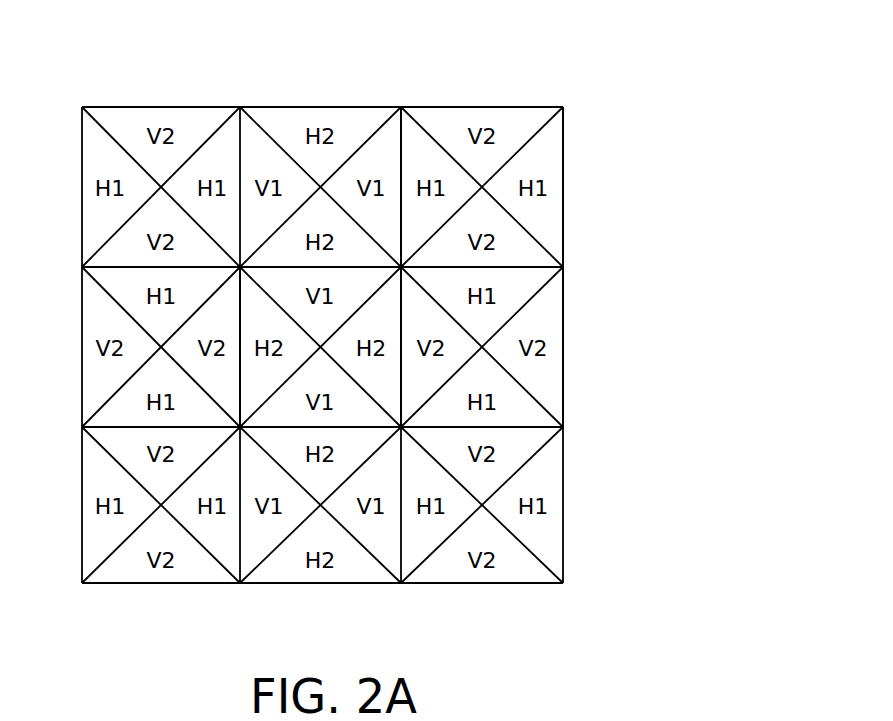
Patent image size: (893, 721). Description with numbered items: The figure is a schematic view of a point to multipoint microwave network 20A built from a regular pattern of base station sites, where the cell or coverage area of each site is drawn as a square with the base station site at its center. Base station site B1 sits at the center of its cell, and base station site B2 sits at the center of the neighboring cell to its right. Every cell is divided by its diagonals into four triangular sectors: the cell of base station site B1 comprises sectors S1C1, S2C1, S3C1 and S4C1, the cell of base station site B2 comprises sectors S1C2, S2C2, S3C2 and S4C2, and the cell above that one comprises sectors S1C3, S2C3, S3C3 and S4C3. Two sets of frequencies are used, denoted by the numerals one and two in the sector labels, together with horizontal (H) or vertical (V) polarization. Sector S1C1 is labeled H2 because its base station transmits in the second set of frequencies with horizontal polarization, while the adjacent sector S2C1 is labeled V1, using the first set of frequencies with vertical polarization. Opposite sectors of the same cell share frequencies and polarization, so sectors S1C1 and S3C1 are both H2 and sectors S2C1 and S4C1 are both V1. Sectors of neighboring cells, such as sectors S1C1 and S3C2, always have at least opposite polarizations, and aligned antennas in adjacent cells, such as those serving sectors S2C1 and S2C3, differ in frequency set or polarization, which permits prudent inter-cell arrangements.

The point to multipoint microwave network 20A is at (650, 90).
The base station site B1 is at (320, 345).
The base station site B2 is at (483, 345).
The sector S1C1 is at (387, 373).
The sector S2C1 is at (290, 280).
The sector S3C1 is at (247, 387).
The sector S4C1 is at (290, 410).
The sector S1C2 is at (547, 385).
The sector S2C2 is at (563, 262).
The sector S3C2 is at (417, 403).
The sector S4C2 is at (513, 430).
The sector S1C3 is at (535, 153).
The sector S2C3 is at (527, 120).
The sector S3C3 is at (412, 152).
The sector S4C3 is at (520, 248).